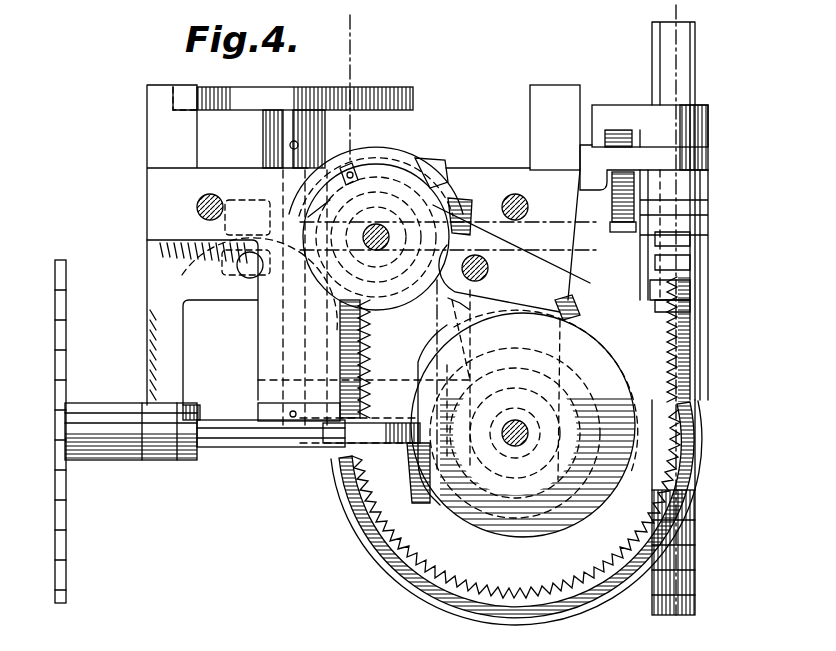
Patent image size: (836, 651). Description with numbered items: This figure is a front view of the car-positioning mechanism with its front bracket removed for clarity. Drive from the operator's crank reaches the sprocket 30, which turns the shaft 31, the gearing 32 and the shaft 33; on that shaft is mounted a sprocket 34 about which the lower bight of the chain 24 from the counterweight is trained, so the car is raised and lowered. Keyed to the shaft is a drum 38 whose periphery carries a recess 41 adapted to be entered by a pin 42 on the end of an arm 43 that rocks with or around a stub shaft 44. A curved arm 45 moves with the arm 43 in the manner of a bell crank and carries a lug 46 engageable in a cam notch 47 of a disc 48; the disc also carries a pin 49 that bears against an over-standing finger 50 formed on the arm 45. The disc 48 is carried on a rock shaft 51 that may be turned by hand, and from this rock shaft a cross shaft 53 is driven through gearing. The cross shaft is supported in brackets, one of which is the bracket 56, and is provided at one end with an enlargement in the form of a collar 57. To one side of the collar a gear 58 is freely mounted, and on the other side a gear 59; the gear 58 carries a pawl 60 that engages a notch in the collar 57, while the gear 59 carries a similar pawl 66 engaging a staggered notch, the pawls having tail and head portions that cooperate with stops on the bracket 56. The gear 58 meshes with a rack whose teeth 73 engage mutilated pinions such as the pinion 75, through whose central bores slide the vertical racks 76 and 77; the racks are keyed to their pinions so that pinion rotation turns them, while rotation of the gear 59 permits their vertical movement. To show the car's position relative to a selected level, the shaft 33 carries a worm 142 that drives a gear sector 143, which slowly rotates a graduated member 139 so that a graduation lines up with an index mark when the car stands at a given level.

The graduated member 139 is at (300, 82).
The chain 24 is at (352, 68).
The pin 49 is at (346, 166).
The cam notch 47 is at (382, 150).
The curved arm 45 is at (422, 162).
The lug 46 is at (442, 180).
The over-standing finger 50 is at (335, 178).
The rock shaft 51 is at (376, 237).
The rack teeth 73 is at (632, 128).
The mutilated pinion 75 is at (700, 136).
The cross shaft 53 is at (580, 220).
The gear 58 is at (618, 204).
The bracket 56 is at (705, 209).
The pawl 66 is at (668, 240).
The gear 59 is at (672, 266).
The collar 57 is at (688, 287).
The vertical rack 77 is at (690, 302).
The pawl 60 is at (690, 332).
The pin 42 is at (568, 318).
The recess 41 is at (600, 348).
The arm 43 is at (511, 258).
The stub shaft 44 is at (444, 401).
The disc 48 is at (337, 353).
The shaft 33 is at (525, 413).
The shaft 31 is at (241, 448).
The sprocket 30 is at (67, 538).
The gear sector 143 is at (375, 433).
The worm 142 is at (420, 470).
The gearing 32 is at (470, 482).
The sprocket 34 is at (415, 540).
The drum 38 is at (578, 520).
The vertical rack 76 is at (695, 536).